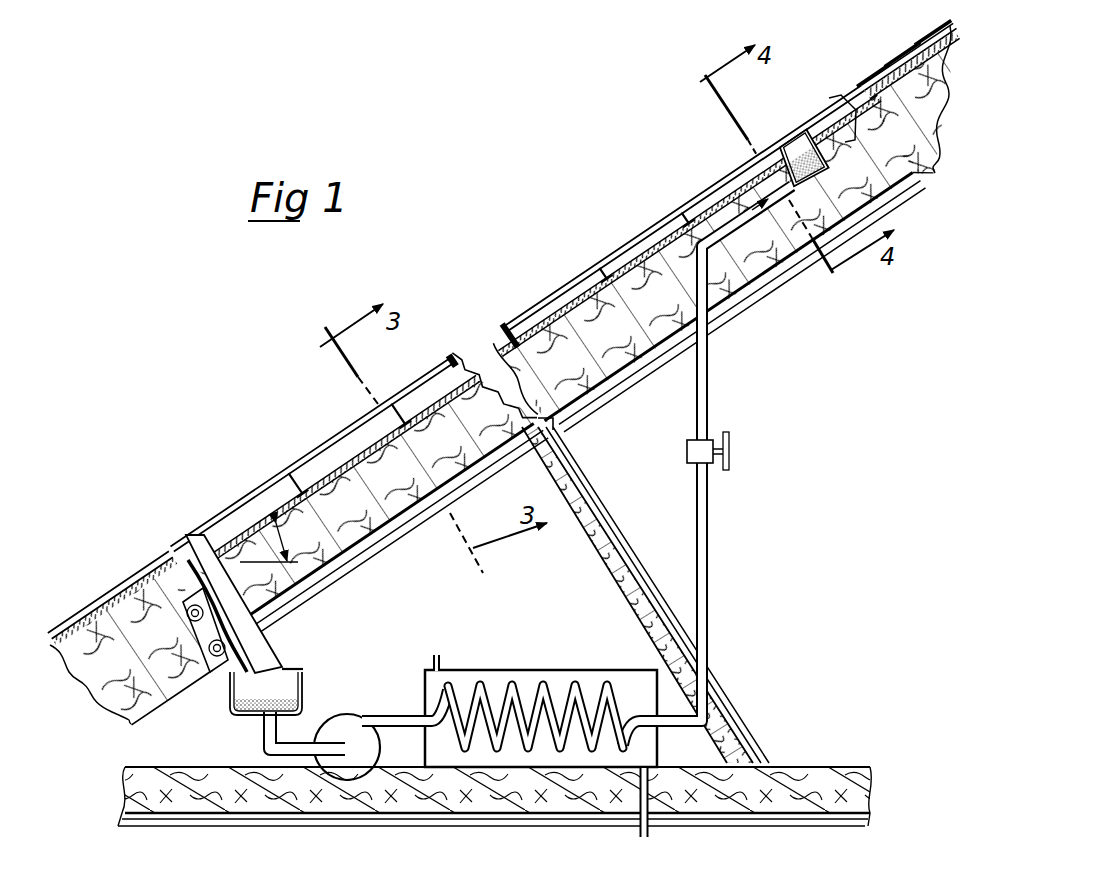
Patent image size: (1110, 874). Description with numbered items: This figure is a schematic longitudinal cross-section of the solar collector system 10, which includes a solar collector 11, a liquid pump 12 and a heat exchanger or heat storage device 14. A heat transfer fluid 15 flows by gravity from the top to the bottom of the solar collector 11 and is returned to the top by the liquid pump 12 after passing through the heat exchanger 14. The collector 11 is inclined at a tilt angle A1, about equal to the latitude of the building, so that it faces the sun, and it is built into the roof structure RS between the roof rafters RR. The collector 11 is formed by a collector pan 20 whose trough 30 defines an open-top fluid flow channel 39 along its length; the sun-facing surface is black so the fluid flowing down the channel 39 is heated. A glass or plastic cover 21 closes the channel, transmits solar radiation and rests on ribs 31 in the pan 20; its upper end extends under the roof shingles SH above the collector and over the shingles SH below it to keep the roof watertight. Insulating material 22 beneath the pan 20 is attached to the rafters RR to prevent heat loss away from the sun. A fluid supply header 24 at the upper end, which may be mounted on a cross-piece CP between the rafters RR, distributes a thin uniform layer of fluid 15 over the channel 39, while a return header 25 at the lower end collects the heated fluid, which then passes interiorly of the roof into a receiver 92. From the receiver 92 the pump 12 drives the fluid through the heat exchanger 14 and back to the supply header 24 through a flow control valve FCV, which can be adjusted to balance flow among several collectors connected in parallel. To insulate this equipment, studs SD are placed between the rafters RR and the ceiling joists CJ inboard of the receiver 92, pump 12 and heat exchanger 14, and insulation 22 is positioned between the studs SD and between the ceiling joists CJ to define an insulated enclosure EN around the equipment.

The solar collector system 10 is at (552, 254).
The solar collector 11 is at (470, 358).
The liquid pump 12 is at (333, 708).
The heat exchanger 14 is at (532, 668).
The heat transfer fluid 15 is at (237, 720).
The collector pan 20 is at (336, 468).
The cover 21 is at (332, 435).
The insulating material 22 is at (167, 783).
The fluid supply header 24 is at (776, 160).
The return header 25 is at (177, 592).
The trough 30 is at (595, 303).
The ribs 31 is at (403, 404).
The fluid flow channel 39 is at (527, 330).
The receiver 92 is at (298, 672).
The tilt angle A1 is at (290, 530).
The roof shingles SH is at (98, 608).
The roof structure RS is at (866, 63).
The cross-piece CP is at (834, 114).
The roof rafters RR is at (924, 97).
The flow control valve FCV is at (707, 447).
The insulated enclosure EN is at (618, 565).
The studs SD is at (731, 701).
The ceiling joists CJ is at (485, 822).